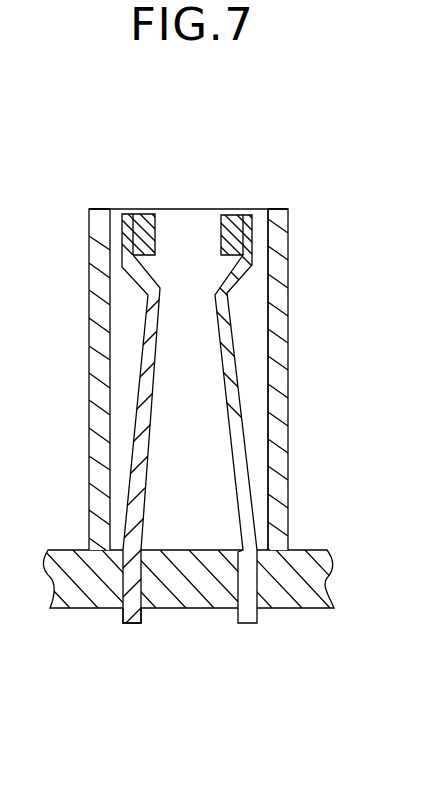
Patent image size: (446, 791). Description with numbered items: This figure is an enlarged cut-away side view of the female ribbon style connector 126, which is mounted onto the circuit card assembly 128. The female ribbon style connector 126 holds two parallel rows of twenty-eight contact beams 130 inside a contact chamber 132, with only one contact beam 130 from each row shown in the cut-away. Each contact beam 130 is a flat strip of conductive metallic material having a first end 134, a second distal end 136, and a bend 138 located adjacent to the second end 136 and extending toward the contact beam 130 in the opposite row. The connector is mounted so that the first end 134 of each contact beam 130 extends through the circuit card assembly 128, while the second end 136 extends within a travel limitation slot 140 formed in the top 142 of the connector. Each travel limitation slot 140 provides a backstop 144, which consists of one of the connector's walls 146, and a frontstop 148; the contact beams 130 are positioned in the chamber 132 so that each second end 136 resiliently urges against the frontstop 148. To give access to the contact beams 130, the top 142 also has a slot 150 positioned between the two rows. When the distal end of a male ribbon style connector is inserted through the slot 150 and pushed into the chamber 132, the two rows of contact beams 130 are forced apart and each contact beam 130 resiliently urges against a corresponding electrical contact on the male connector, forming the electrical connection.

The female ribbon style connector 126 is at (223, 392).
The circuit card assembly 128 is at (310, 610).
The contact beam 130 is at (262, 353).
The contact chamber 132 is at (212, 489).
The first end 134 is at (127, 613).
The second distal end 136 is at (96, 210).
The bend 138 is at (223, 414).
The travel limitation slot 140 is at (260, 242).
The top 142 is at (245, 210).
The backstop 144 is at (270, 281).
The wall 146 is at (277, 327).
The frontstop 148 is at (220, 217).
The slot 150 is at (156, 229).